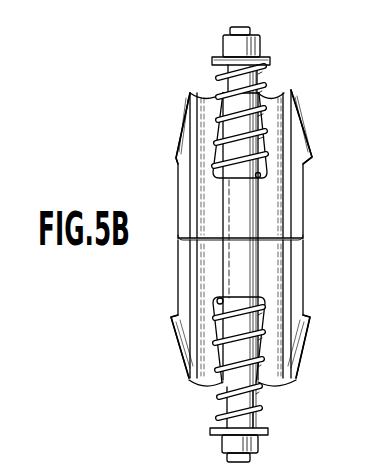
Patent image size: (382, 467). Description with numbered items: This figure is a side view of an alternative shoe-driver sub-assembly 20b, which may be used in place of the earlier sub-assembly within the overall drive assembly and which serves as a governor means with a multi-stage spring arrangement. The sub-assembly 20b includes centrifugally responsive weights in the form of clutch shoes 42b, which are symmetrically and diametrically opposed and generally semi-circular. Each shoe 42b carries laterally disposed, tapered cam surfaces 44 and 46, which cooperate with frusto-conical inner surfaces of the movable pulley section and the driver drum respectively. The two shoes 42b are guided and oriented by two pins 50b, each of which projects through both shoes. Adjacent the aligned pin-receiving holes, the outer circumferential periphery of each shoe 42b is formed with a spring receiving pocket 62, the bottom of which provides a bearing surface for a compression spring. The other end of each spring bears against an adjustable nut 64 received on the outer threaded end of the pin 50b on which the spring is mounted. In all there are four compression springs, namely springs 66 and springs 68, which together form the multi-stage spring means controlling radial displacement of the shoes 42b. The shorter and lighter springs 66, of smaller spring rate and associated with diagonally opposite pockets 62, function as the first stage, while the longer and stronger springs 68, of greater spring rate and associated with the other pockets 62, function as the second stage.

The shoe-driver sub-assembly 20b is at (190, 50).
The clutch shoe 42b is at (314, 182).
The tapered cam surface 44 is at (182, 152).
The tapered cam surface 46 is at (178, 300).
The pin 50b is at (264, 100).
The spring receiving pocket 62 is at (258, 231).
The adjustable nut 64 is at (264, 37).
The compression spring 66 is at (262, 88).
The compression spring 68 is at (221, 399).